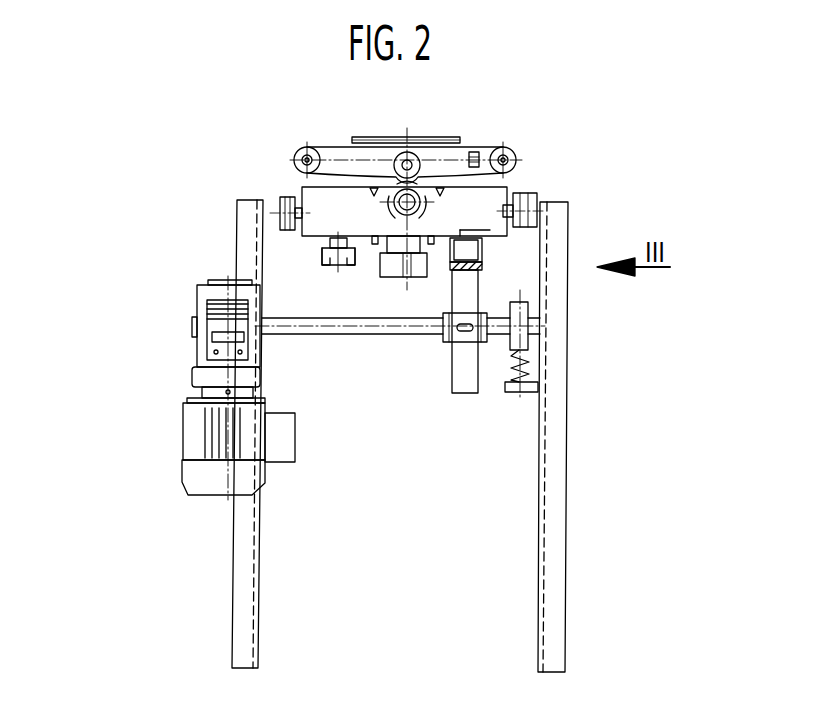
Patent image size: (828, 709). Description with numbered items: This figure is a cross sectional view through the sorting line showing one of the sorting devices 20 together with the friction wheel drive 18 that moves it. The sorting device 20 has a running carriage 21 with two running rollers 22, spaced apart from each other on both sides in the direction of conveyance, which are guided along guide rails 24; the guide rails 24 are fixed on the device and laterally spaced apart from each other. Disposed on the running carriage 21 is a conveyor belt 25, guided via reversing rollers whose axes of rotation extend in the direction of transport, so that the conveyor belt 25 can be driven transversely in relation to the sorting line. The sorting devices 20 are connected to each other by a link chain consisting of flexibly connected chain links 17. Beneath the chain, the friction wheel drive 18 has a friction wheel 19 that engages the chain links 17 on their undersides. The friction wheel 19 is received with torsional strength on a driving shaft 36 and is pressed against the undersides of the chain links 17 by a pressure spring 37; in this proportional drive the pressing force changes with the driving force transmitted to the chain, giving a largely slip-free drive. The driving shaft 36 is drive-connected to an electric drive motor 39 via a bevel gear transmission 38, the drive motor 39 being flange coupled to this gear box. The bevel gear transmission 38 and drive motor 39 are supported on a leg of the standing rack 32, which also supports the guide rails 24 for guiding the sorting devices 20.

The chain links 17 is at (483, 247).
The friction wheel drive 18 is at (402, 362).
The friction wheel 19 is at (458, 393).
The sorting devices 20 is at (484, 146).
The running carriage 21 is at (497, 196).
The running rollers 22 is at (283, 196).
The guide rails 24 is at (537, 191).
The conveyor belt 25 is at (318, 146).
The standing rack 32 is at (568, 453).
The driving shaft 36 is at (319, 335).
The pressure spring 37 is at (505, 372).
The bevel gear transmission 38 is at (197, 315).
The electric drive motor 39 is at (187, 419).